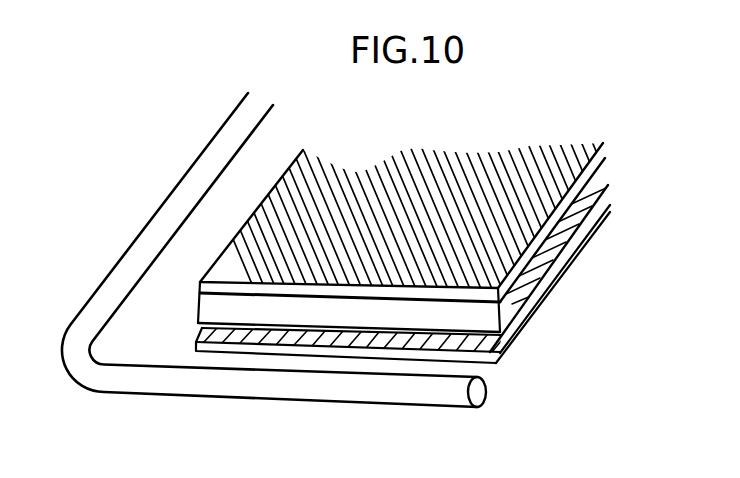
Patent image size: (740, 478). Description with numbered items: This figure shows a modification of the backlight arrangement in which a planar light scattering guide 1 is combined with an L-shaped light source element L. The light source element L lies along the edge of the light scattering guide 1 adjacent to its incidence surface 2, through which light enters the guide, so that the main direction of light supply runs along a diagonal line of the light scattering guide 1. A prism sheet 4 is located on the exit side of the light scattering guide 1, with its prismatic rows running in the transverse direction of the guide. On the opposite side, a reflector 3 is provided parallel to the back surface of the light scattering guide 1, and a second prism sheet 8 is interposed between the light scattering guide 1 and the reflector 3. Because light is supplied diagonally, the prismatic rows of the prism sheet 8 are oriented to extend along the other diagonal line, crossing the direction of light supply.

The light scattering guide 1 is at (533, 267).
The incidence surface 2 is at (230, 306).
The reflector 3 is at (496, 363).
The prism sheet 4 is at (291, 178).
The prism sheet 8 is at (505, 336).
The light source element L is at (148, 378).